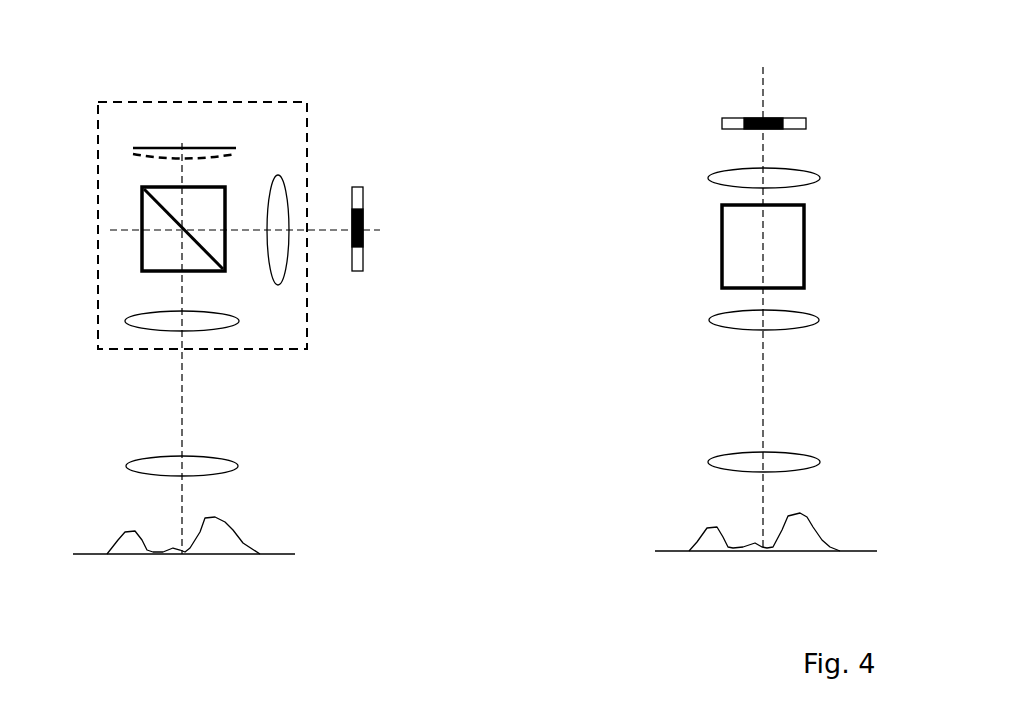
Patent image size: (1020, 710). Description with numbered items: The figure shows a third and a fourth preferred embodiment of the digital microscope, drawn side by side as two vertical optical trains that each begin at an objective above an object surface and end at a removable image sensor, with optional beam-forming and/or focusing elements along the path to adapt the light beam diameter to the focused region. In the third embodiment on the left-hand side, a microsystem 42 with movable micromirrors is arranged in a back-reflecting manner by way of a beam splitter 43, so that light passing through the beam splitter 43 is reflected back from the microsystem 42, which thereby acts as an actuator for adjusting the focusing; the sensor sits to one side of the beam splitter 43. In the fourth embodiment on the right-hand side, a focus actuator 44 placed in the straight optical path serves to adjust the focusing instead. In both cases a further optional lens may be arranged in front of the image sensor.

The microsystem with movable micromirrors 42 is at (156, 157).
The beam splitter 43 is at (142, 222).
The focus actuator 44 is at (803, 255).